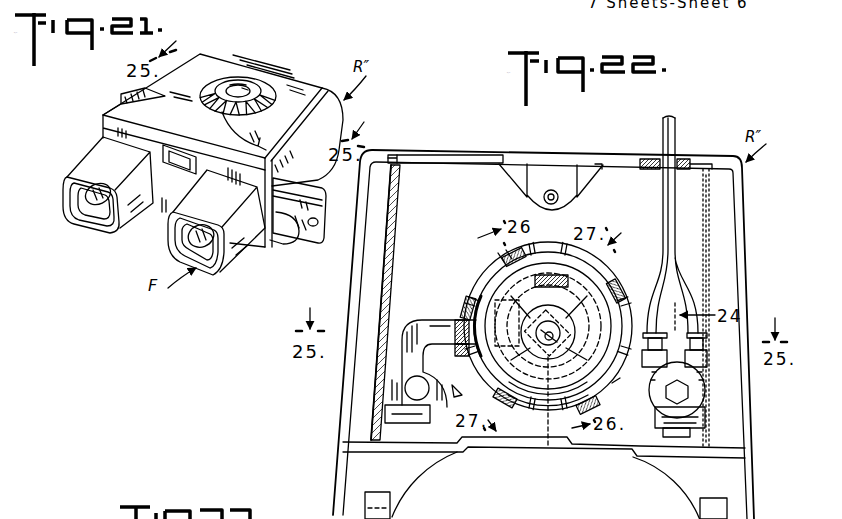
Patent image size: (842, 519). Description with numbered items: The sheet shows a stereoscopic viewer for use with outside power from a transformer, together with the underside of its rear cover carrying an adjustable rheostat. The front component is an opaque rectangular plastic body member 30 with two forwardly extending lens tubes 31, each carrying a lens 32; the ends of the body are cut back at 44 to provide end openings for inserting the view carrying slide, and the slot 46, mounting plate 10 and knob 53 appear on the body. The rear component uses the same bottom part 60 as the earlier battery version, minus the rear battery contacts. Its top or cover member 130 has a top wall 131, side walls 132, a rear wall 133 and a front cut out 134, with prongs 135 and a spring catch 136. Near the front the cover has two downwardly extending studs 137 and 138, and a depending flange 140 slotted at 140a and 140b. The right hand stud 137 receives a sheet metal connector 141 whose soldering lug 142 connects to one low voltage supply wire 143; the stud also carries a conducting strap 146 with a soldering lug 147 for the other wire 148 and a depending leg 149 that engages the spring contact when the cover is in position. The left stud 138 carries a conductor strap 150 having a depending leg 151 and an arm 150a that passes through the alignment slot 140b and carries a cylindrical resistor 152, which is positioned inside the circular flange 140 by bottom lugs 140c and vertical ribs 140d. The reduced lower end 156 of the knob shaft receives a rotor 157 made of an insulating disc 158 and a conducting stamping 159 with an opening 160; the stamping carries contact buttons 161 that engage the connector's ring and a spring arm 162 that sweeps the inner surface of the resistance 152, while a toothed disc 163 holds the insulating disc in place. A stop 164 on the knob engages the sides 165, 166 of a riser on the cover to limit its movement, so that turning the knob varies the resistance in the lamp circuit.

In FIG. 21, the mounting plate 10 is at (301, 224).
In FIG. 21, the body member 30 is at (97, 131).
In FIG. 21, the lens tube 31 is at (82, 224).
In FIG. 21, the lens 32 is at (104, 200).
In FIG. 21, the cut back end 44 is at (284, 229).
In FIG. 21, the slot 46 is at (183, 167).
In FIG. 21, the knurled knob 53 is at (260, 82).
In FIG. 21, the bottom part 60 is at (313, 151).
In FIG. 21, the top wall 131 is at (214, 58).
In FIG. 22, the top wall 131 is at (442, 224).
In FIG. 22, the cover member 130 is at (431, 131).
In FIG. 22, the side wall 132 is at (349, 368).
In FIG. 22, the rear wall 133 is at (507, 133).
In FIG. 22, the front cut out 134 is at (420, 480).
In FIG. 22, the prong 135 is at (397, 515).
In FIG. 22, the spring catch 136 is at (545, 172).
In FIG. 22, the stud 137 is at (680, 390).
In FIG. 22, the stud 138 is at (412, 419).
In FIG. 22, the depending flange 140 is at (476, 285).
In FIG. 22, the slot 140a is at (604, 408).
In FIG. 22, the alignment slot 140b is at (466, 302).
In FIG. 22, the bottom lug 140c is at (547, 274).
In FIG. 22, the vertical rib 140d is at (525, 257).
In FIG. 22, the sheet metal connector 141 is at (640, 447).
In FIG. 22, the soldering lug 142 is at (633, 300).
In FIG. 22, the low voltage supply wire 143 is at (660, 129).
In FIG. 22, the conducting strap 146 is at (702, 398).
In FIG. 22, the soldering lug 147 is at (703, 341).
In FIG. 22, the wire 148 is at (677, 136).
In FIG. 22, the depending leg 149 is at (704, 434).
In FIG. 22, the conductor strap 150 is at (470, 300).
In FIG. 22, the arm 150a is at (454, 340).
In FIG. 22, the depending leg 151 is at (385, 408).
In FIG. 22, the cylindrical resistor 152 is at (490, 286).
In FIG. 22, the reduced lower end 156 is at (561, 337).
In FIG. 22, the rotor 157 is at (582, 285).
In FIG. 22, the insulating disc 158 is at (586, 318).
In FIG. 22, the conducting stamping 159 is at (548, 416).
In FIG. 22, the opening 160 is at (558, 352).
In FIG. 22, the contact button 161 is at (509, 246).
In FIG. 22, the spring arm 162 is at (530, 412).
In FIG. 22, the disc 163 is at (557, 320).
In FIG. 22, the stop 164 is at (459, 394).
In FIG. 22, the side of riser 165 is at (561, 357).
In FIG. 22, the side of riser 166 is at (456, 352).